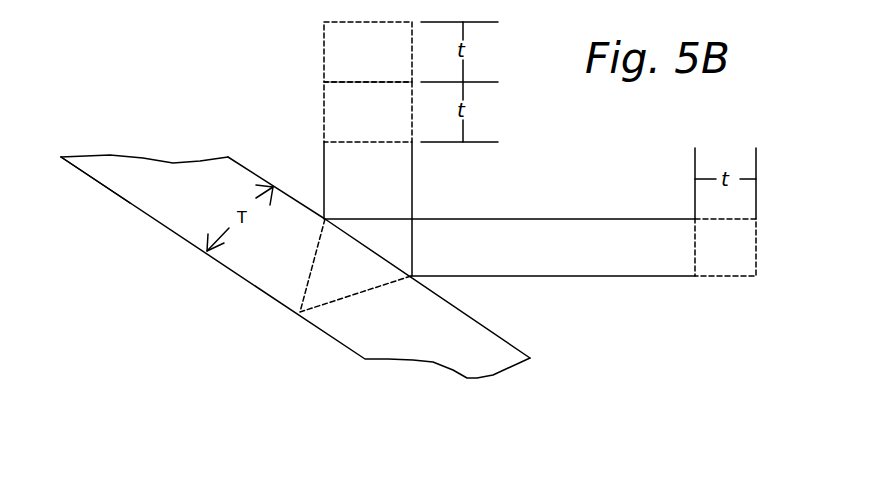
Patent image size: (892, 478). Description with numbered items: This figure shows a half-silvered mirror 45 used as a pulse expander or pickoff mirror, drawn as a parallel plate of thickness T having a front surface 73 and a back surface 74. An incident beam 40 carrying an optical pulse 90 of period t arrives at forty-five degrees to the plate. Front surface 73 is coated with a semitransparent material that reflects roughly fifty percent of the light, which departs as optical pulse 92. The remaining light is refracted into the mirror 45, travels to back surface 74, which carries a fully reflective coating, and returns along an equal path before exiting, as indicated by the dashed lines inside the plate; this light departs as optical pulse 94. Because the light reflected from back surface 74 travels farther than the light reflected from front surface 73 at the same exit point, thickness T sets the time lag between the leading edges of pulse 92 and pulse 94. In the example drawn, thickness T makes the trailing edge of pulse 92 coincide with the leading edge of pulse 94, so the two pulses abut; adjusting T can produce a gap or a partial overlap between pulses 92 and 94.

The incident beam 40 is at (570, 261).
The half-silvered mirror 45 is at (182, 210).
The front surface 73 is at (256, 174).
The back surface 74 is at (129, 202).
The optical pulse 90 is at (737, 261).
The optical pulse 92 is at (383, 65).
The optical pulse 94 is at (383, 118).